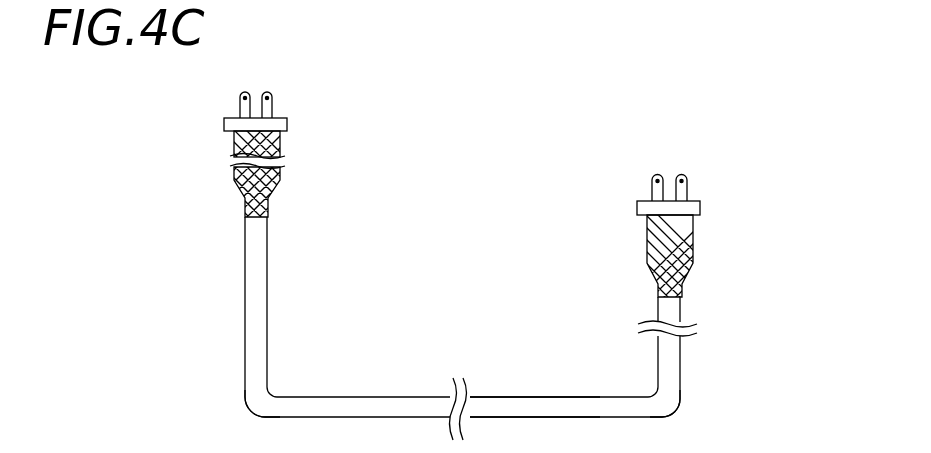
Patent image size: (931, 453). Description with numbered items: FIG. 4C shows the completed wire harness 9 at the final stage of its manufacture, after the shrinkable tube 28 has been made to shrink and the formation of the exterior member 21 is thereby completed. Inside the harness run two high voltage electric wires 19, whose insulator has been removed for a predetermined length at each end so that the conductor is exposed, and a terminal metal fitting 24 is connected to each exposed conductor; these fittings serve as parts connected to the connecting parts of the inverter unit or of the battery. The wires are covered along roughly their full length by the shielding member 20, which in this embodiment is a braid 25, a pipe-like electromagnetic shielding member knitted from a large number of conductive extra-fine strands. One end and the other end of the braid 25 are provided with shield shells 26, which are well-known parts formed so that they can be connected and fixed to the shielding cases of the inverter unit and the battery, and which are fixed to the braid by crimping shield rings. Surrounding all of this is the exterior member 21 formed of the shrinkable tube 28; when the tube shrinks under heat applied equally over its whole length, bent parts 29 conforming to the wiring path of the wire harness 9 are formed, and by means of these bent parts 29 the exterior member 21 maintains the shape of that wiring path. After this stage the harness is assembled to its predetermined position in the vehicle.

The wire harness 9 is at (460, 267).
The high voltage electric wire 19 is at (230, 184).
The shielding member 20 is at (260, 158).
The exterior member 21 is at (410, 397).
The terminal metal fitting 24 is at (240, 96).
The braid 25 is at (684, 234).
The shield shell 26 is at (287, 125).
The shrinkable tube 28 is at (510, 395).
The bent part 29 is at (257, 405).